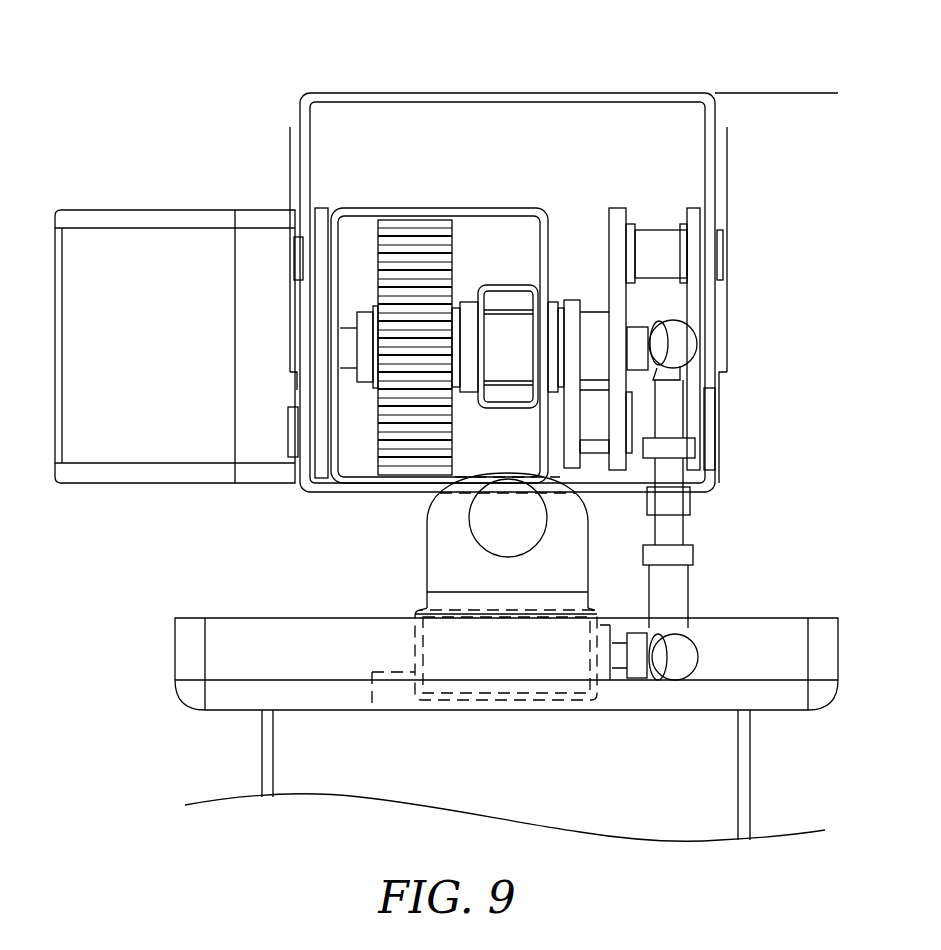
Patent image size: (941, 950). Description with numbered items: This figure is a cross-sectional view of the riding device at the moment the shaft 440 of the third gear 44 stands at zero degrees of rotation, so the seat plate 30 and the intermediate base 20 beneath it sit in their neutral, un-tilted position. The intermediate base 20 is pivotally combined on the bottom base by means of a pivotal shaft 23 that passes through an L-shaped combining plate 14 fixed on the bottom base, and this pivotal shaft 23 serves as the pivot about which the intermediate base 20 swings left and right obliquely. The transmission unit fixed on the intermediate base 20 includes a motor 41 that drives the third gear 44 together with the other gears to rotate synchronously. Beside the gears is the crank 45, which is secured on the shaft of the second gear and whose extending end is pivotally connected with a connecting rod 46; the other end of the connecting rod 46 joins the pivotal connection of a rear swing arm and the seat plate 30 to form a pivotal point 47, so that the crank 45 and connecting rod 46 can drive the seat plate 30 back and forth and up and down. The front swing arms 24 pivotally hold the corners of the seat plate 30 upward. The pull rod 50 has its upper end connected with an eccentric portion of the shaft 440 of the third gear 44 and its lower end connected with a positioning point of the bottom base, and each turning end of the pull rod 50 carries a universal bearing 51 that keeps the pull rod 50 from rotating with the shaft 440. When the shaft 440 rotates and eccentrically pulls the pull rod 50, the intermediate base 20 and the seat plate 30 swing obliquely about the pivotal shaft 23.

The L-shaped combining plate 14 is at (545, 572).
The intermediate base 20 is at (605, 672).
The pivotal shaft 23 is at (483, 520).
The front swing arm 24 is at (320, 257).
The seat plate 30 is at (510, 100).
The motor 41 is at (160, 255).
The third gear 44 is at (415, 240).
The crank 45 is at (572, 425).
The connecting rod 46 is at (616, 293).
The pivotal point 47 is at (690, 262).
The pull rod 50 is at (683, 528).
The universal bearing 51 is at (682, 340).
The shaft of the third gear 440 is at (635, 348).